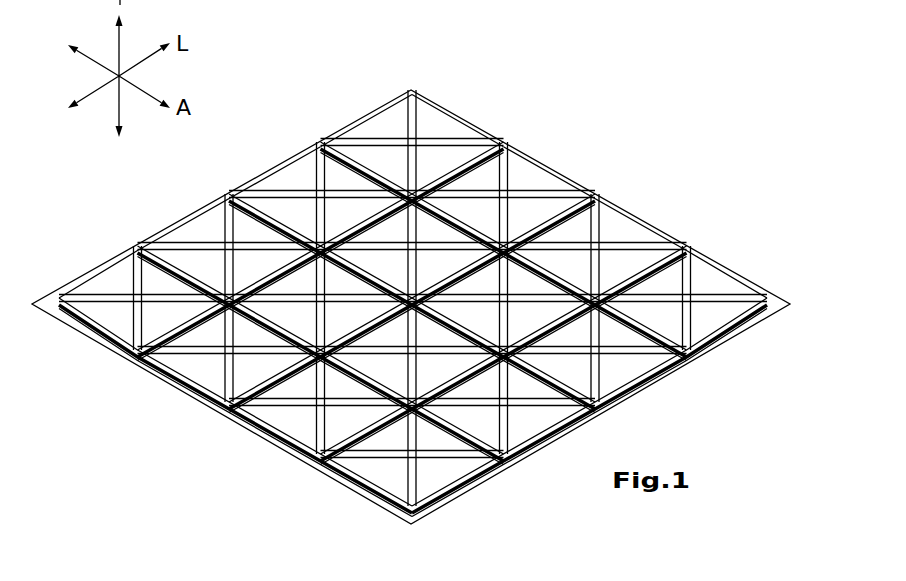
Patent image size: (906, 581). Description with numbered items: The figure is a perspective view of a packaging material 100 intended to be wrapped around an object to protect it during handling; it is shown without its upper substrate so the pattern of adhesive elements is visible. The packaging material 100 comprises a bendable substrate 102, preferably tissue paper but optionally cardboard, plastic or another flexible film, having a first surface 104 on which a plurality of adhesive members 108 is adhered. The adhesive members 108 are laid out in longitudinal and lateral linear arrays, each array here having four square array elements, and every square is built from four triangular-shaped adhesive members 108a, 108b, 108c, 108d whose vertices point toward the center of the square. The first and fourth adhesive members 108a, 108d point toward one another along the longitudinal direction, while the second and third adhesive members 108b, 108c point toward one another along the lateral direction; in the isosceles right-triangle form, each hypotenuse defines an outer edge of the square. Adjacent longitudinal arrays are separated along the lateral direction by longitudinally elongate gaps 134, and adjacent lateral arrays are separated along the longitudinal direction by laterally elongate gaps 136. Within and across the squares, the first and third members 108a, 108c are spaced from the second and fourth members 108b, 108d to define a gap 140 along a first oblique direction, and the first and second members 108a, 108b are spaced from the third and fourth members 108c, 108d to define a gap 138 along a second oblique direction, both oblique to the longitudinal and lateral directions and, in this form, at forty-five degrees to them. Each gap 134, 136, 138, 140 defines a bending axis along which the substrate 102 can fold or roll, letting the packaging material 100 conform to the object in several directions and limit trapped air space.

The packaging material 100 is at (582, 60).
The substrate 102 is at (781, 307).
The first surface 104 is at (771, 295).
The adhesive members 108 is at (710, 317).
The first triangular-shaped adhesive member 108a is at (435, 120).
The second triangular-shaped adhesive member 108b is at (392, 113).
The third triangular-shaped adhesive member 108c is at (445, 150).
The fourth triangular-shaped adhesive member 108d is at (378, 148).
The gaps 134 is at (505, 139).
The gaps 136 is at (687, 354).
The gap 138 is at (314, 139).
The gap 140 is at (412, 78).